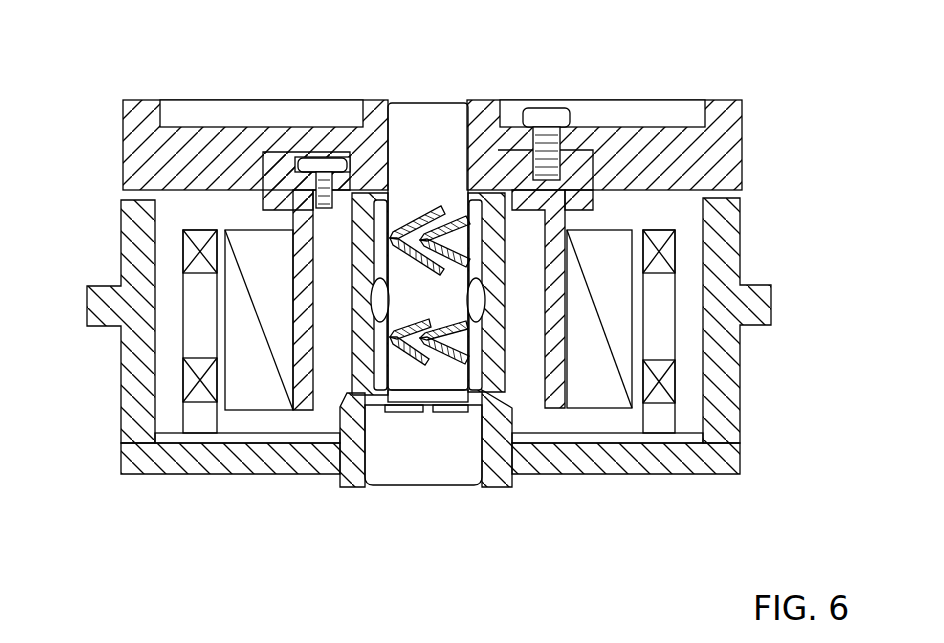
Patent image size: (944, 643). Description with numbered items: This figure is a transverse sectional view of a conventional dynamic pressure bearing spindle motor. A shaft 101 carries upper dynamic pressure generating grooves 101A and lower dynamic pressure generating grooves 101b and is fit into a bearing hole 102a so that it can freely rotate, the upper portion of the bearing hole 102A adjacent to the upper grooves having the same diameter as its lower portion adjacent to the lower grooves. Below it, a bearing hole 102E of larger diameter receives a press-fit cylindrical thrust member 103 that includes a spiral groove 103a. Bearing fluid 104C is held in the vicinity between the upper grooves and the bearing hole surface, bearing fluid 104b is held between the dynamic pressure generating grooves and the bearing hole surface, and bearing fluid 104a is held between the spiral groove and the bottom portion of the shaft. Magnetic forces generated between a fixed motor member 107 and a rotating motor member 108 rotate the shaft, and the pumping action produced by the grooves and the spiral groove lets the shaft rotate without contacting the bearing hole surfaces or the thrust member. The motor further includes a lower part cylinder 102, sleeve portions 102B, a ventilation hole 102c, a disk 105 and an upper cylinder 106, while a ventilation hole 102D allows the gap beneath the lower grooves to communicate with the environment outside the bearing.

The shaft 101 is at (420, 128).
The dynamic pressure generating grooves 101A is at (412, 212).
The dynamic pressure generating grooves 101b is at (290, 212).
The lower part cylinder 102 is at (140, 443).
The bearing hole 102a is at (327, 183).
The bearing hole 102A is at (277, 473).
The sleeve portions 102B is at (187, 473).
The ventilation hole 102c is at (503, 286).
The ventilation hole 102D is at (645, 473).
The bearing hole 102E is at (530, 473).
The cylindrical thrust member 103 is at (442, 462).
The spiral groove 103a is at (397, 412).
The bearing fluid 104a is at (345, 477).
The bearing fluid 104b is at (505, 353).
The bearing fluid 104C is at (495, 190).
The disk 105 is at (578, 170).
The upper cylinder 106 is at (695, 152).
The fixed motor member 107 is at (197, 293).
The rotating motor member 108 is at (238, 317).